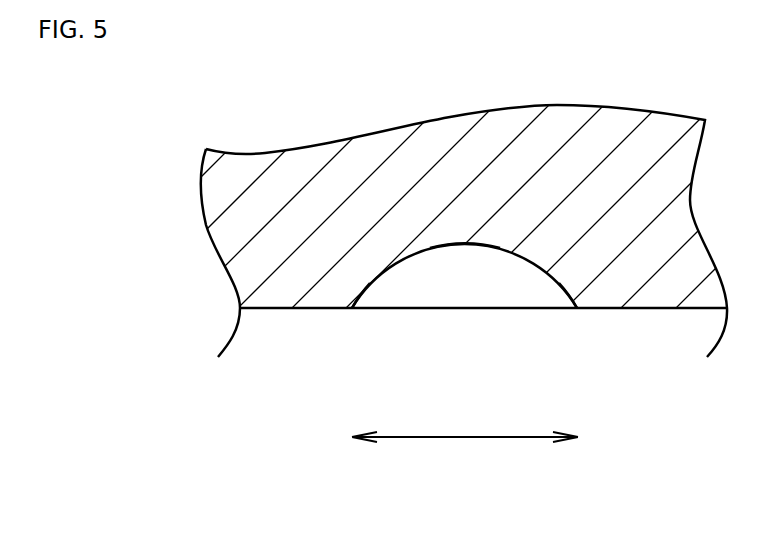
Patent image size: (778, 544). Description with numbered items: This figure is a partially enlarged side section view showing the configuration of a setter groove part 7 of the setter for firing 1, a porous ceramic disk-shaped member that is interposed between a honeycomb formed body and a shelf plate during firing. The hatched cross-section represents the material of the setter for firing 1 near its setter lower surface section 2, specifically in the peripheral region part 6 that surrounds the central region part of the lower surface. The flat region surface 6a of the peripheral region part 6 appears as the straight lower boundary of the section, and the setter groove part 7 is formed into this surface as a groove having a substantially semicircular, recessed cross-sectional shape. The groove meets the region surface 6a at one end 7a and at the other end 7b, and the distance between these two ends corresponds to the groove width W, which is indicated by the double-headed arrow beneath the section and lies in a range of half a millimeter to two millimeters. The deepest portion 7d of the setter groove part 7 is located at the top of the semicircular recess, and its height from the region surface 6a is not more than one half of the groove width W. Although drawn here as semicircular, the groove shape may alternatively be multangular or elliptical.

The setter for firing 1 is at (261, 135).
The setter lower surface section 2 is at (483, 355).
The peripheral region part 6 is at (483, 355).
The region surface 6a is at (640, 308).
The setter groove part 7 is at (555, 280).
The one end 7a is at (575, 308).
The other end 7b is at (353, 308).
The deepest portion 7d is at (470, 245).
The groove width W is at (464, 437).